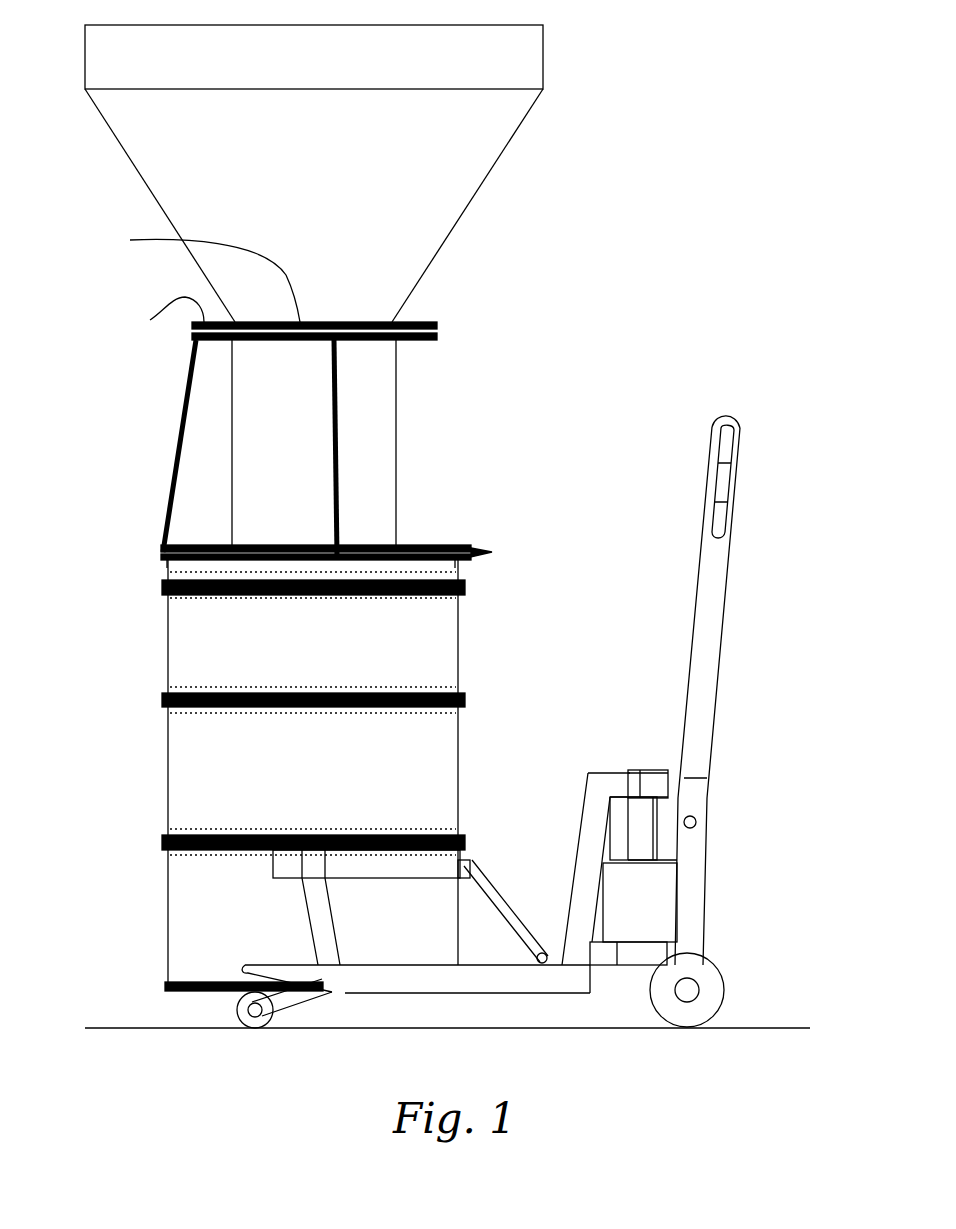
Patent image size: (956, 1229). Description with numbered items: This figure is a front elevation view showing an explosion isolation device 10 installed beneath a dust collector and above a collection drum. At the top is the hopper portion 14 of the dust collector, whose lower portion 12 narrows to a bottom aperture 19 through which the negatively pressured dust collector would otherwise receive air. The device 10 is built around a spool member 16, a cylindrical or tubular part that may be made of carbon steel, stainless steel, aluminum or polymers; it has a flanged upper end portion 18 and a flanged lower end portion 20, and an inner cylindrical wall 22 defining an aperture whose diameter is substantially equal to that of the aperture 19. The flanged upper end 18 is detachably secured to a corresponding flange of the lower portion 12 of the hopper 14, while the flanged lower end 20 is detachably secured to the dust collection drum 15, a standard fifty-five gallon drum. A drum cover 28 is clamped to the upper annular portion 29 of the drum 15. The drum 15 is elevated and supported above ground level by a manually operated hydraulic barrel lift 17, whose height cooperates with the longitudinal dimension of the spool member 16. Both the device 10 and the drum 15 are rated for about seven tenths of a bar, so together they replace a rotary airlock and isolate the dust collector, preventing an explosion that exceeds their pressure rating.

The explosion isolation device 10 is at (353, 508).
The lower portion 12 is at (415, 235).
The hopper portion 14 is at (525, 52).
The dust collection drum 15 is at (262, 775).
The spool member 16 is at (375, 425).
The hydraulic barrel lift 17 is at (705, 678).
The flanged upper end portion 18 is at (420, 345).
The bottom aperture 19 is at (130, 240).
The flanged lower end portion 20 is at (420, 545).
The inner cylindrical wall 22 is at (185, 437).
The drum cover 28 is at (150, 320).
The upper annular portion 29 is at (166, 570).